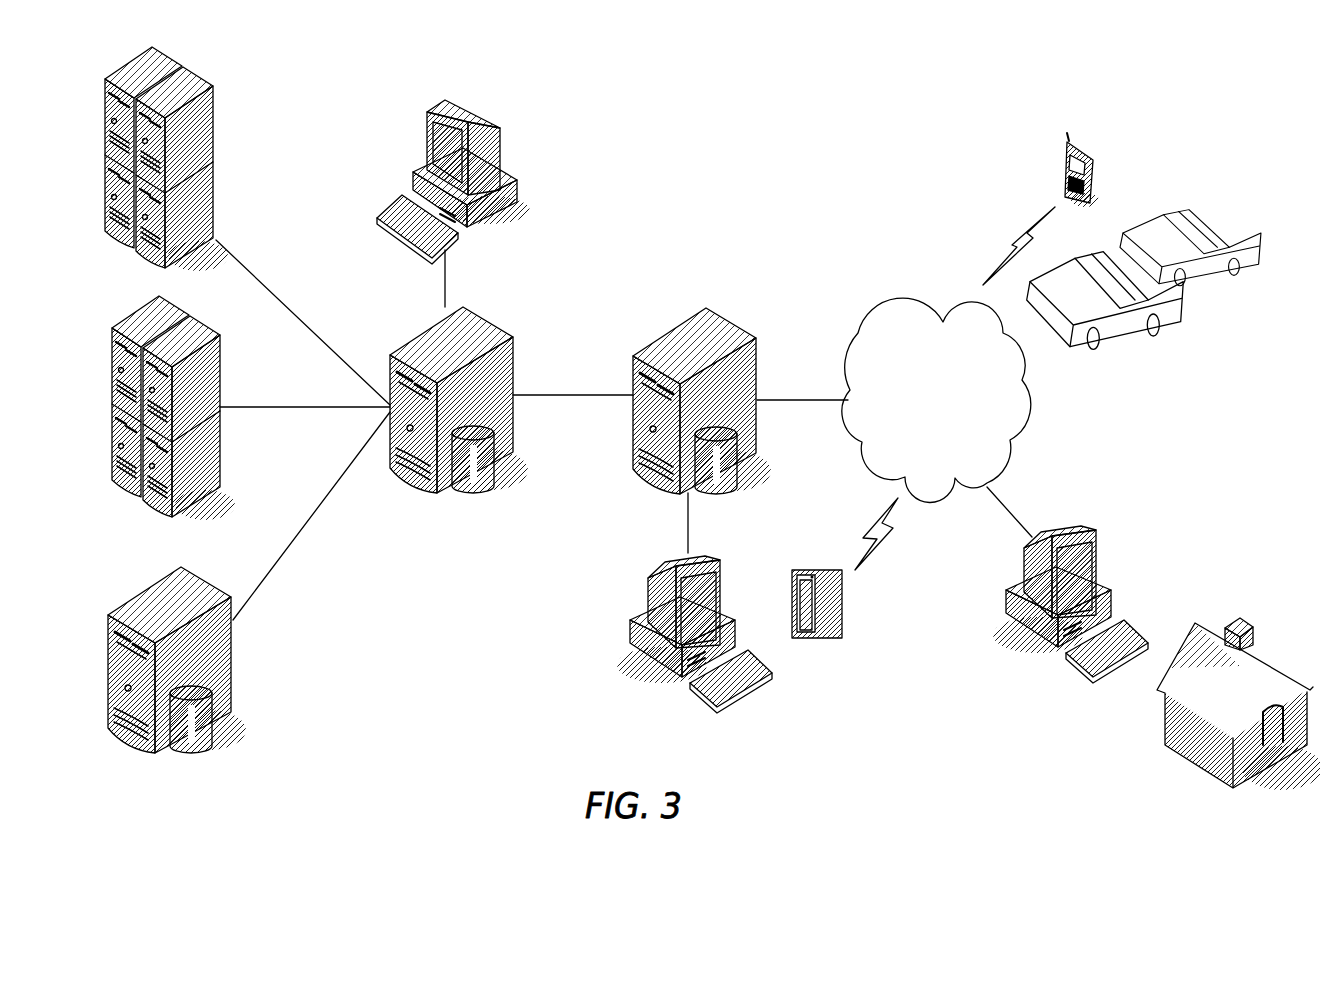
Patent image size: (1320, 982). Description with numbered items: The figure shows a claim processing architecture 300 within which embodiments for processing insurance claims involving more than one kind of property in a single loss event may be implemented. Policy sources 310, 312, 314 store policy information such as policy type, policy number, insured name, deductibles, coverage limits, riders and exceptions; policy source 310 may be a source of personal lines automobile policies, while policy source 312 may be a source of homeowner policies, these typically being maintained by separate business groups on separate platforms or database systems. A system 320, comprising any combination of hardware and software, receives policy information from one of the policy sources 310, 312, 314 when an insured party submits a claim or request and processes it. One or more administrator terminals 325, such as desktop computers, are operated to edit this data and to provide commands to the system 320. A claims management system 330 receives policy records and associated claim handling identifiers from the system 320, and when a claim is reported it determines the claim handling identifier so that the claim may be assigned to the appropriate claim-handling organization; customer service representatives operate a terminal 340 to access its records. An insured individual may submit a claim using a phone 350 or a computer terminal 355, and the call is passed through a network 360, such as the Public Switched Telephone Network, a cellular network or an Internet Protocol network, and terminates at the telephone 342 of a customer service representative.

The claim processing architecture 300 is at (899, 86).
The policy source 310 is at (200, 83).
The policy source 312 is at (202, 492).
The policy source 314 is at (233, 667).
The system 320 is at (430, 497).
The administrator terminal 325 is at (455, 125).
The claims management system 330 is at (715, 328).
The terminal 340 is at (720, 563).
The telephone 342 is at (818, 642).
The phone 350 is at (1082, 143).
The computer terminal 355 is at (1097, 515).
The network 360 is at (950, 412).